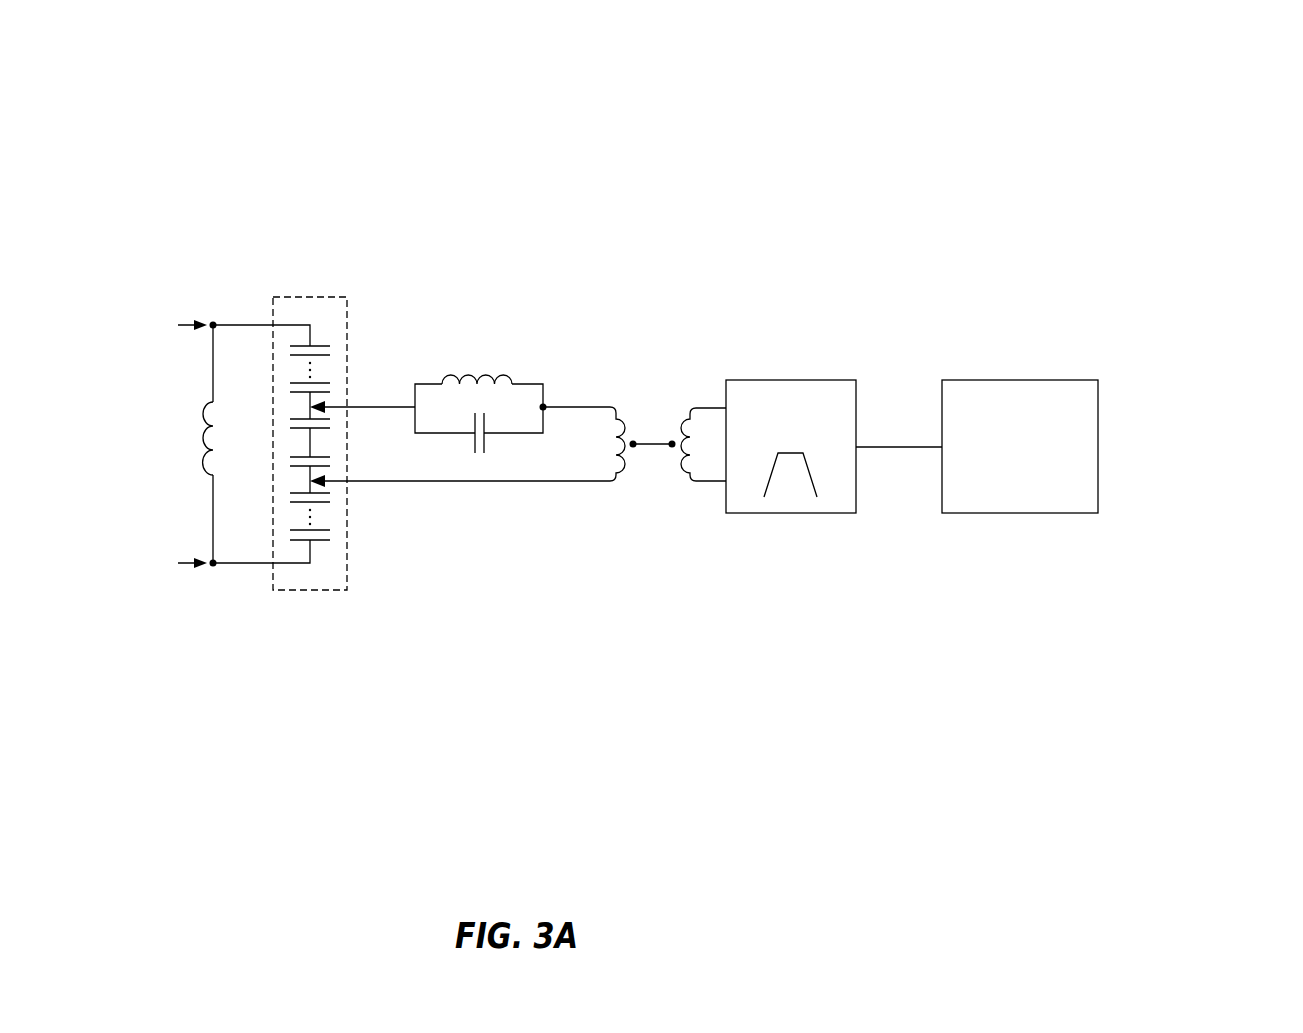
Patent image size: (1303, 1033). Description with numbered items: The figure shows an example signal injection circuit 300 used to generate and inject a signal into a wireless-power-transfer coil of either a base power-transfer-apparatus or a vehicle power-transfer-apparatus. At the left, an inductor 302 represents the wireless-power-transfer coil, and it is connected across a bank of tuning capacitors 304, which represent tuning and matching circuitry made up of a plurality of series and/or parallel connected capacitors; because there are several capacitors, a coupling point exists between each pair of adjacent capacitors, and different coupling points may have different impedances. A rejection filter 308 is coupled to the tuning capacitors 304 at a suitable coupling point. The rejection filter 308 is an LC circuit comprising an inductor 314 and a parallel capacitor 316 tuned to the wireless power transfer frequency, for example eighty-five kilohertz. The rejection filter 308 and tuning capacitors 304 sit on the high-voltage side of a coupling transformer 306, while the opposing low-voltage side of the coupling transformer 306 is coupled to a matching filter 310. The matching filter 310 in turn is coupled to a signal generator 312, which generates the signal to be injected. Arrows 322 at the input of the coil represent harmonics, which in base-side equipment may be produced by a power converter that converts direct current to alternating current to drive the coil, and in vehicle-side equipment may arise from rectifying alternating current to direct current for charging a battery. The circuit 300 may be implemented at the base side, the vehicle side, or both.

The signal injection circuit 300 is at (1215, 64).
The inductor 302 is at (205, 425).
The tuning capacitors 304 is at (312, 591).
The coupling transformer 306 is at (643, 494).
The rejection filter 308 is at (452, 335).
The matching filter 310 is at (790, 379).
The signal generator 312 is at (1020, 379).
The inductor 314 is at (512, 378).
The parallel capacitor 316 is at (485, 446).
The arrows 322 is at (202, 320).